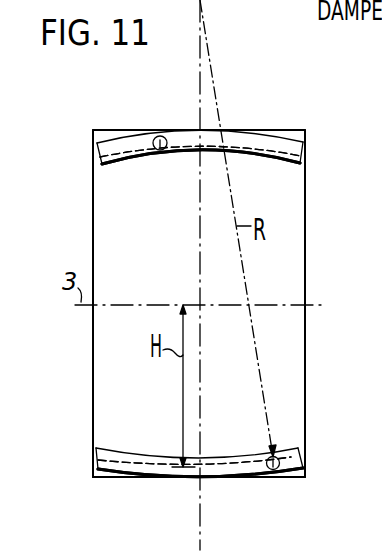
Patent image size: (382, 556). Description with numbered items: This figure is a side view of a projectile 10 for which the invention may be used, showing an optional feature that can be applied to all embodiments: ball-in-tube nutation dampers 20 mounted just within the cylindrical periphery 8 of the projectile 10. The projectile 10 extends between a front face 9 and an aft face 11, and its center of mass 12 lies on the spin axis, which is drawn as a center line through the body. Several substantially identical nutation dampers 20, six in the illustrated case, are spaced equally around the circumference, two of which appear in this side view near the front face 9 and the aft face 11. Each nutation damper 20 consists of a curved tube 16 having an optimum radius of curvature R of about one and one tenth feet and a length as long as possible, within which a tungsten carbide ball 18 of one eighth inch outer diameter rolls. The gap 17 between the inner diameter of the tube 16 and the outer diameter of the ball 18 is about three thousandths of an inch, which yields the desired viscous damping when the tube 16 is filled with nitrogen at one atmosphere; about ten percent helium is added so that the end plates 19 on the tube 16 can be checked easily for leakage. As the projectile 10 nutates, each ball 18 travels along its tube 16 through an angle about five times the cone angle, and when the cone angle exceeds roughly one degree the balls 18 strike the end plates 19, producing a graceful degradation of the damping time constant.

The cylindrical periphery 8 is at (120, 478).
The front face 9 is at (93, 361).
The projectile 10 is at (92, 227).
The aft face 11 is at (307, 350).
The center of mass 12 is at (200, 303).
The tube 16 is at (178, 156).
The gap 17 is at (167, 154).
The ball 18 is at (157, 150).
The end plates 19 is at (94, 155).
The nutation dampers 20 is at (255, 154).